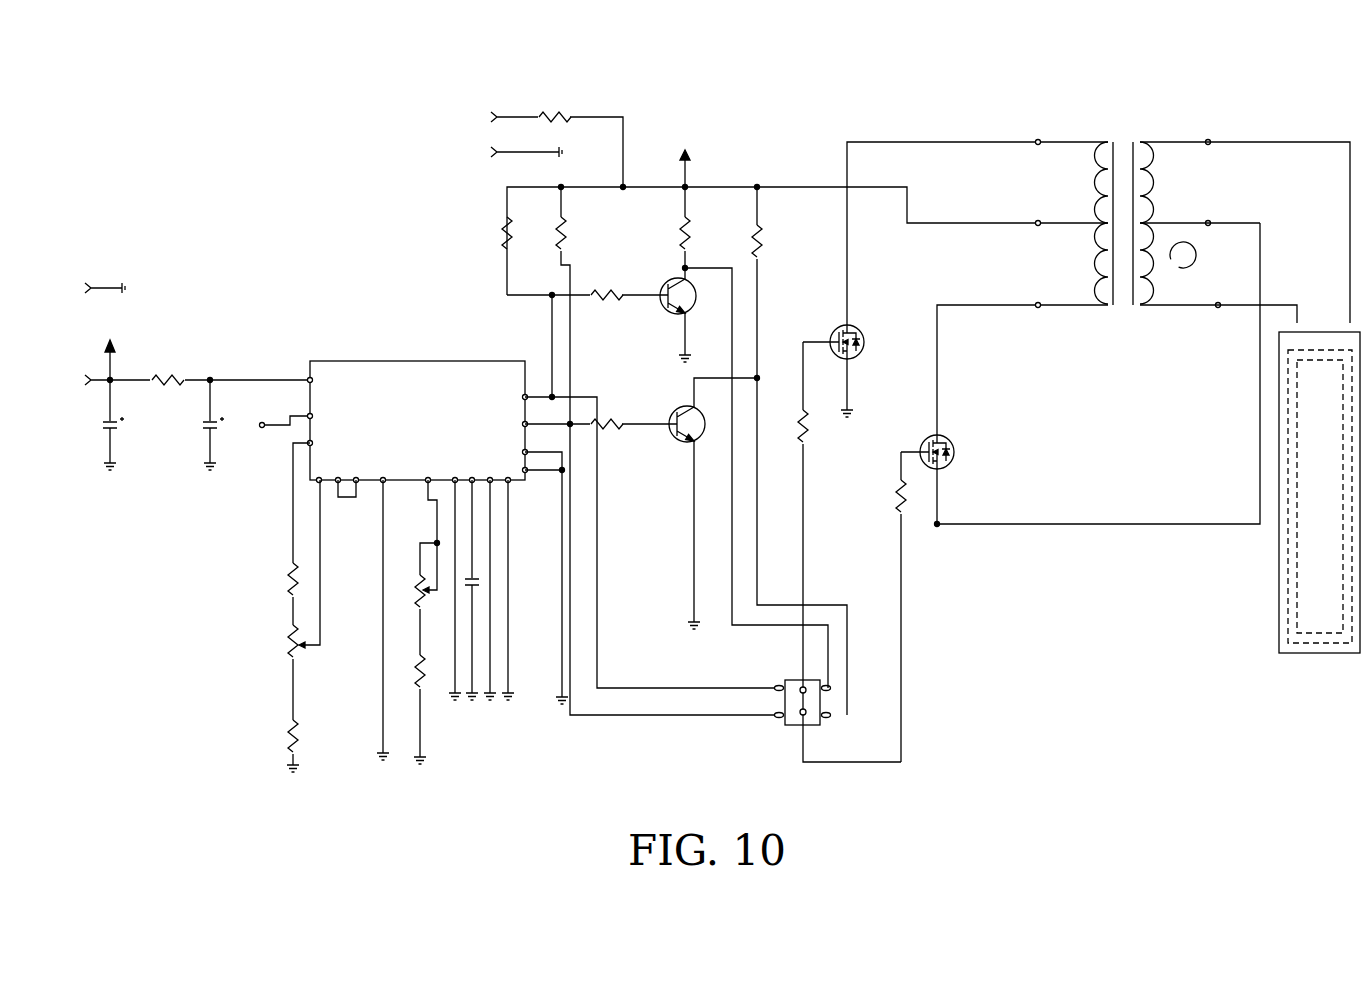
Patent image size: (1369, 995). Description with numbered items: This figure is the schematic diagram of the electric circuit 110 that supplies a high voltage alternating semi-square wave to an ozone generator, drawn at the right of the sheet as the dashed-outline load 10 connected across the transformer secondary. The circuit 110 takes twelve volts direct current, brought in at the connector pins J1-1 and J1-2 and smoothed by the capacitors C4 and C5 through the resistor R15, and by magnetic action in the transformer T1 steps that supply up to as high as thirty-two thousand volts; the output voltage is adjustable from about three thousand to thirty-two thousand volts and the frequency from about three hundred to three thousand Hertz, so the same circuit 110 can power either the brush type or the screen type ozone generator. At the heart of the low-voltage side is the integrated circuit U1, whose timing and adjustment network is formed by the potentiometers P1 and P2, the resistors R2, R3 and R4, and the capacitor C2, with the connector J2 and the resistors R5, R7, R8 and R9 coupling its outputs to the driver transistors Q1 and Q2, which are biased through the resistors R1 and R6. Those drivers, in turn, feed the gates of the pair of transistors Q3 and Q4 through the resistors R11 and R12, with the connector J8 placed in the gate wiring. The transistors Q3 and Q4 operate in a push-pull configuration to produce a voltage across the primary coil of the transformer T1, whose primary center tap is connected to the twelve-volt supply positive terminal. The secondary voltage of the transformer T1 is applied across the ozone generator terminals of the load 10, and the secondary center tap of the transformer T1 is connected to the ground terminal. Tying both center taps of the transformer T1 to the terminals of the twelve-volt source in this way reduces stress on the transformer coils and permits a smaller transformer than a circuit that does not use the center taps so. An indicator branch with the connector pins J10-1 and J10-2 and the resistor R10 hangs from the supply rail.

The electric circuit 110 is at (256, 126).
The lamp 10 is at (1312, 601).
The PWM controller LM3524DN U1 is at (418, 422).
The transistor Q1 is at (690, 296).
The transistor Q2 is at (674, 438).
The transistor Q3 is at (837, 355).
The transistor Q4 is at (928, 444).
The transformer T1 is at (1128, 196).
The connector J8 is at (792, 694).
The resistor R1 is at (673, 240).
The resistor R2 is at (410, 688).
The resistor R3 is at (278, 587).
The resistor R4 is at (278, 756).
The resistor R5 is at (620, 411).
The resistor R6 is at (744, 236).
The resistor R7 is at (614, 312).
The resistor R8 is at (498, 244).
The resistor R9 is at (555, 247).
The resistor R10 is at (543, 107).
The resistor R11 is at (793, 443).
The resistor R12 is at (896, 516).
The resistor R15 is at (161, 369).
The potentiometer P1 is at (289, 585).
The potentiometer P2 is at (416, 591).
The capacitor C2 is at (500, 590).
The capacitor C4 is at (97, 425).
The capacitor C5 is at (199, 425).
The connector J2 is at (273, 425).
The connector pin J1-1 is at (92, 383).
The connector pin J1-2 is at (80, 292).
The connector pin J10-1 is at (491, 109).
The connector pin J10-2 is at (503, 161).